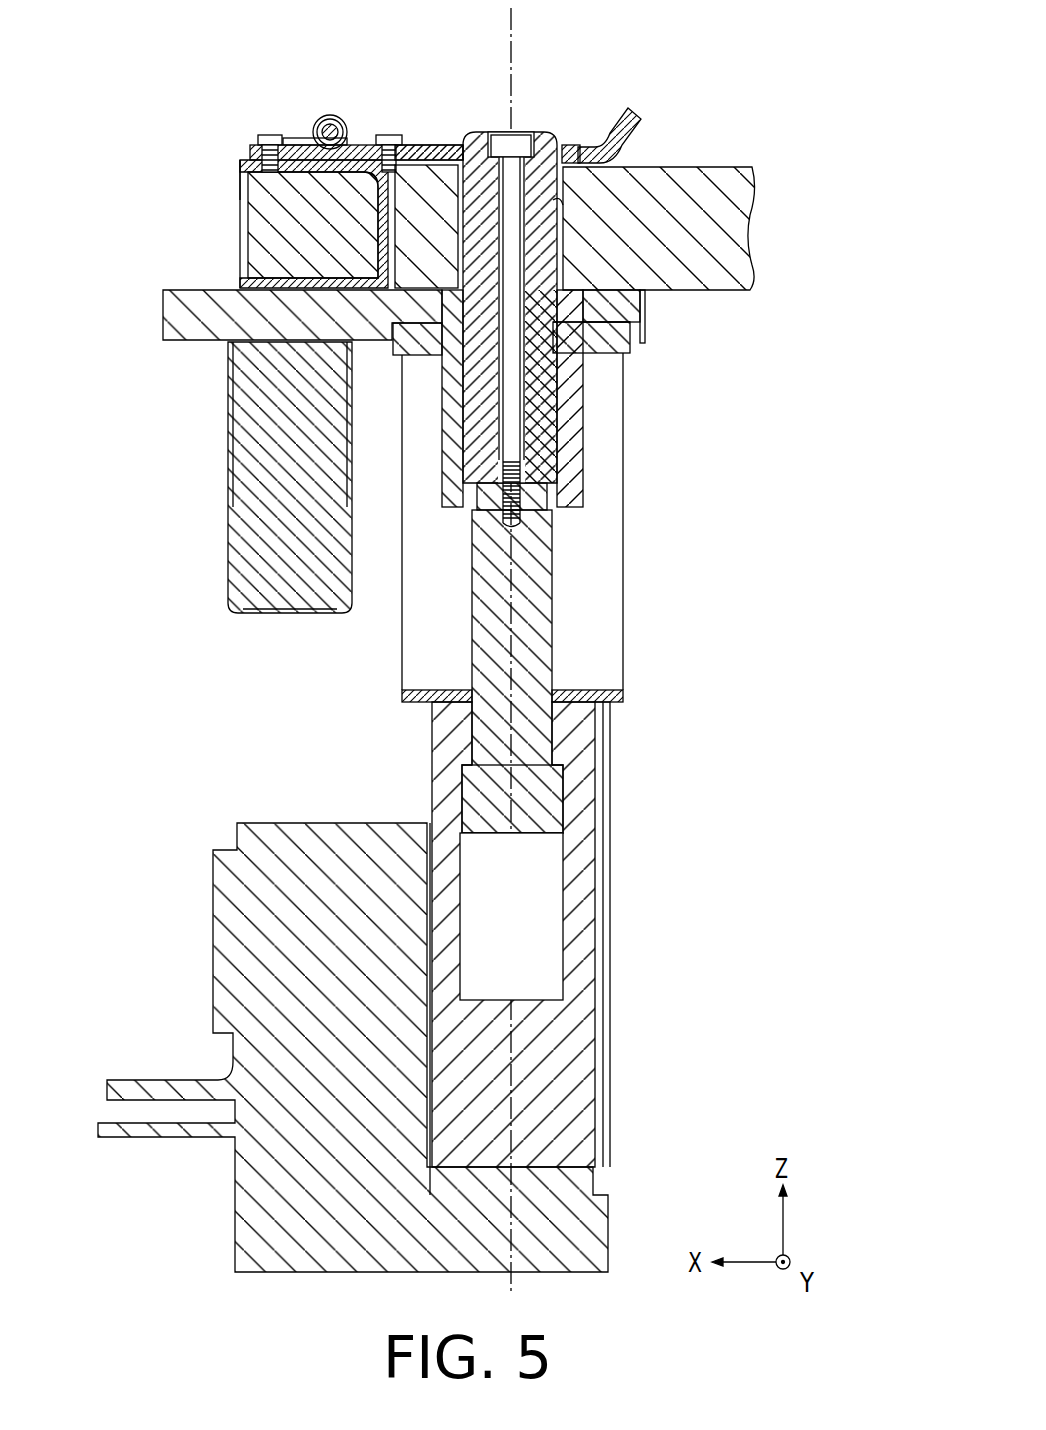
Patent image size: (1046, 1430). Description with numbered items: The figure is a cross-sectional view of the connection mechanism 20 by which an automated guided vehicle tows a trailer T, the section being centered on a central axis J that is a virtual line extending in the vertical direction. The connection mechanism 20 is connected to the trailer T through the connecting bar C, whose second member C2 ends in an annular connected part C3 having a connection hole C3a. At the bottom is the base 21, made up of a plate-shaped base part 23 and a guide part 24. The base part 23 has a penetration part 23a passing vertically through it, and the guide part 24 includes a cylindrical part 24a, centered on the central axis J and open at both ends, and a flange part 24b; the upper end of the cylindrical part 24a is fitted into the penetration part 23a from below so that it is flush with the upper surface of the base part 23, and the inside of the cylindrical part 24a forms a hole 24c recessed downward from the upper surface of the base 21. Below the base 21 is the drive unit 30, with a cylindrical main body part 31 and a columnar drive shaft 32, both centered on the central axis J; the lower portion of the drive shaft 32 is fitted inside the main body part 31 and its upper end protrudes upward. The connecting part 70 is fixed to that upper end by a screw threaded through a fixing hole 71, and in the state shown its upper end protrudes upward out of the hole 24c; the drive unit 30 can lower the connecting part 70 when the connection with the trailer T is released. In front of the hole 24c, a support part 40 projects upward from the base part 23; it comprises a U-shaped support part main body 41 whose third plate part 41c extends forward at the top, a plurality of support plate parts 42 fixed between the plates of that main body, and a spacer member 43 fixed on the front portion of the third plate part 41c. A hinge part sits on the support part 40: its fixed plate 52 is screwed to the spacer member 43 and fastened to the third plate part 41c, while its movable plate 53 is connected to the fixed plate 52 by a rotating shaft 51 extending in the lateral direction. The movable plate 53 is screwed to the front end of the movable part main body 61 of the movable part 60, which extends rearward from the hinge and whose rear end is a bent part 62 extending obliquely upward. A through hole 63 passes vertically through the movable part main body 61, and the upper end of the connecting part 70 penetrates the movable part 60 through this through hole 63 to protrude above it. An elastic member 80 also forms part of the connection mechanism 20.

The central axis J is at (509, 19).
The connection mechanism 20 is at (700, 68).
The base 21 is at (648, 312).
The base part 23 is at (163, 318).
The penetration part 23a is at (557, 326).
The guide part 24 is at (355, 394).
The cylindrical part 24a is at (442, 442).
The flange part 24b is at (423, 347).
The hole 24c is at (478, 282).
The drive unit 30 is at (610, 782).
The main body part 31 is at (582, 1072).
The drive shaft 32 is at (530, 633).
The support part 40 is at (302, 320).
The support part main body 41 is at (265, 298).
The third plate part 41c is at (240, 183).
The support plate parts 42 is at (248, 228).
The spacer member 43 is at (255, 152).
The rotating shaft 51 is at (330, 114).
The fixed plate 52 is at (296, 140).
The movable plate 53 is at (382, 140).
The movable part 60 is at (623, 85).
The movable part main body 61 is at (420, 148).
The bent part 62 is at (612, 128).
The through hole 63 is at (464, 150).
The connecting part 70 is at (550, 437).
The fixing hole 71 is at (516, 172).
The elastic member 80 is at (343, 117).
The connecting bar C is at (743, 166).
The second member C2 is at (715, 170).
The connected part C3 is at (433, 180).
The connection hole C3a is at (556, 200).
The trailer T is at (745, 306).